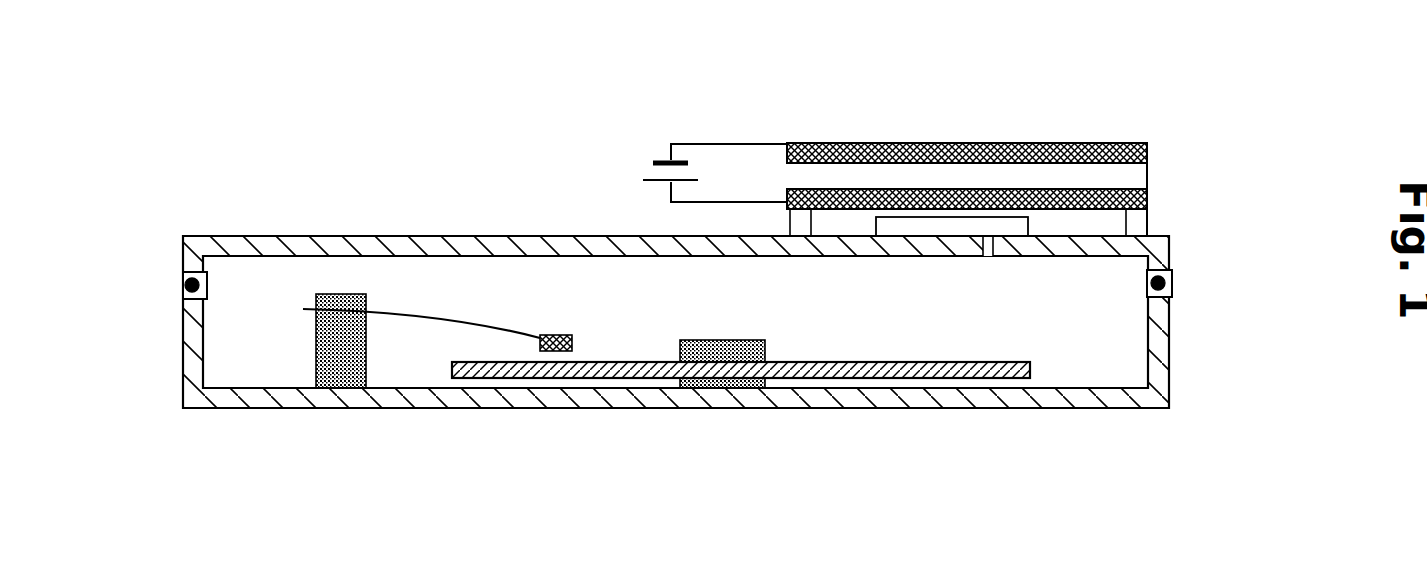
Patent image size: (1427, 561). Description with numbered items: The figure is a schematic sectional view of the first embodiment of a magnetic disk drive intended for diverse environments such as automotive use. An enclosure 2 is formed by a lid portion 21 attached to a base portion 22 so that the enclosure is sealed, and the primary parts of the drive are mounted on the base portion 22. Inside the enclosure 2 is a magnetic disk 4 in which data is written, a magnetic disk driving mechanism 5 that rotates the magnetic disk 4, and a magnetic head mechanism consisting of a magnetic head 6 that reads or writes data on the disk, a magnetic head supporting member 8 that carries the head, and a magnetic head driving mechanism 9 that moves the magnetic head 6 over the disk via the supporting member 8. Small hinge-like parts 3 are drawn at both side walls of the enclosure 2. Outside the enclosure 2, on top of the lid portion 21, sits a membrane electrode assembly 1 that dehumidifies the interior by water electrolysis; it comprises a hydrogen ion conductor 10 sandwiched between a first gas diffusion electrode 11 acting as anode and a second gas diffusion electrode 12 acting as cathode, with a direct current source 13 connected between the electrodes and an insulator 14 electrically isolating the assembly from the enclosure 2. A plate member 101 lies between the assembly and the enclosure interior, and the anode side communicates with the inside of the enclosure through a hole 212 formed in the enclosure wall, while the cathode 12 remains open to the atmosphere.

The membrane electrode assembly 1 is at (995, 176).
The enclosure 2 is at (258, 240).
The hinge 3 is at (185, 285).
The magnetic disk 4 is at (850, 362).
The magnetic disk driving mechanism 5 is at (725, 340).
The magnetic head 6 is at (572, 343).
The magnetic head supporting member 8 is at (507, 325).
The magnetic head driving mechanism 9 is at (316, 341).
The hydrogen ion conductor 10 is at (970, 159).
The first gas diffusion electrode 11 is at (1148, 195).
The second gas diffusion electrode 12 is at (1100, 143).
The direct current source 13 is at (648, 172).
The insulator 14 is at (790, 218).
The lid portion 21 is at (397, 237).
The base portion 22 is at (258, 410).
The plate member 101 is at (897, 228).
The hole 212 is at (1008, 258).